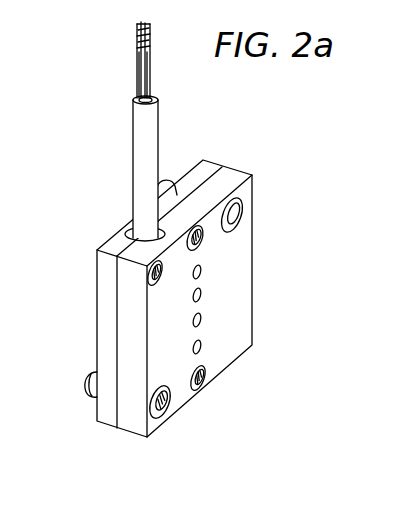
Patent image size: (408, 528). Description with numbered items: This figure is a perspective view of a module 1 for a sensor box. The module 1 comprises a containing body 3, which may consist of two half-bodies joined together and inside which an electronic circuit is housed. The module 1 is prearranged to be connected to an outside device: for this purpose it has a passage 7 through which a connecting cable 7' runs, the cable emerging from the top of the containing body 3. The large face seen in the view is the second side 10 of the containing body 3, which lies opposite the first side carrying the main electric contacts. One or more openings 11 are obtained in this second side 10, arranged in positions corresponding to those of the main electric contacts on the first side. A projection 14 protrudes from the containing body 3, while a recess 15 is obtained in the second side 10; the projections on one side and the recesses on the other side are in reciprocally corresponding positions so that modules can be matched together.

The module 1 is at (282, 178).
The containing body 3 is at (114, 313).
The passage 7 is at (92, 168).
The connecting cable 7' is at (108, 87).
The second side 10 is at (243, 262).
The openings 11 is at (199, 296).
The projections 14 is at (84, 392).
The recesses 15 is at (178, 404).